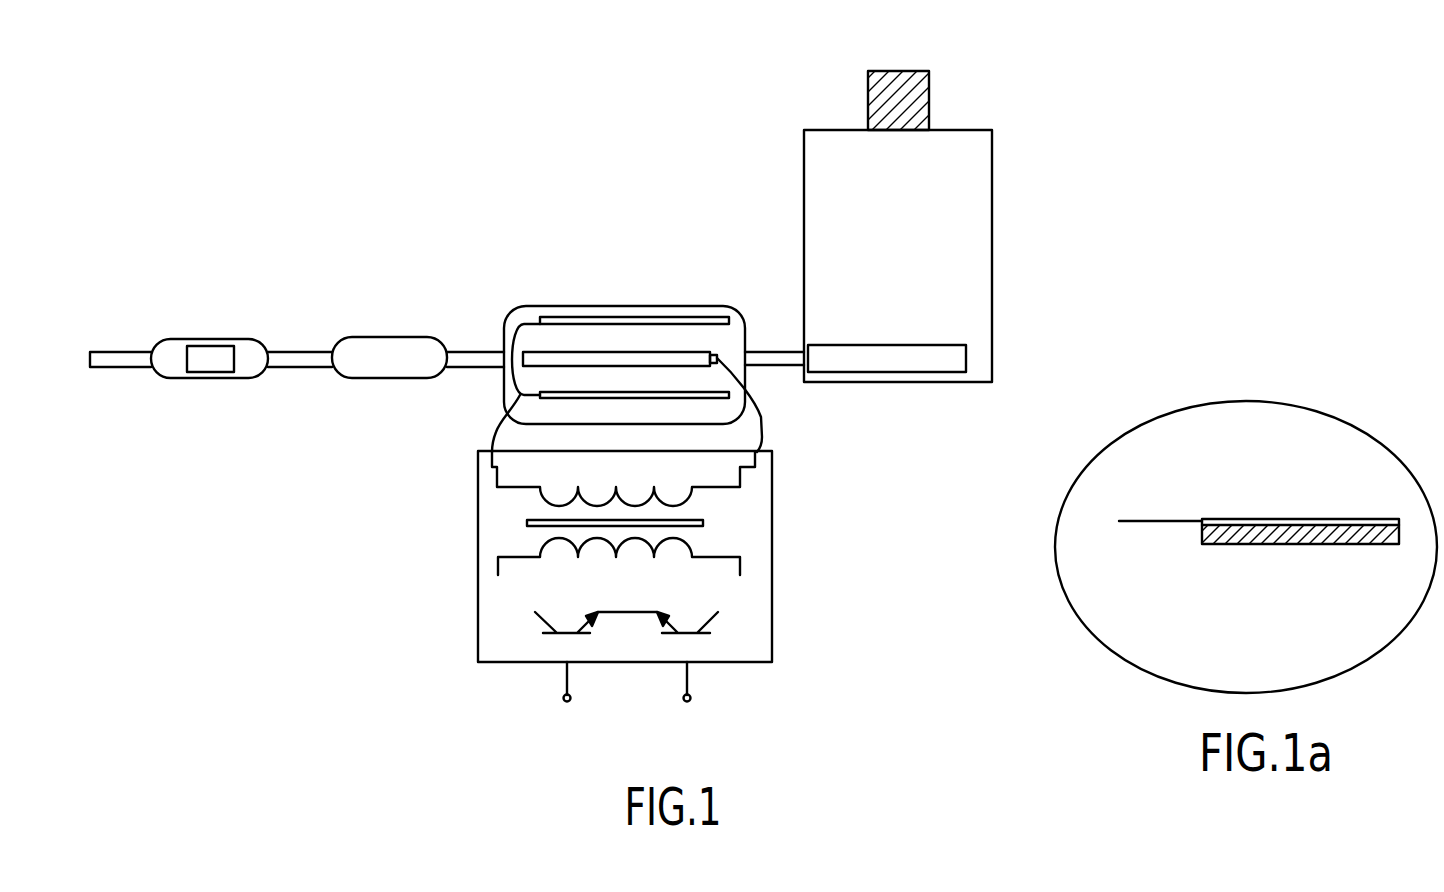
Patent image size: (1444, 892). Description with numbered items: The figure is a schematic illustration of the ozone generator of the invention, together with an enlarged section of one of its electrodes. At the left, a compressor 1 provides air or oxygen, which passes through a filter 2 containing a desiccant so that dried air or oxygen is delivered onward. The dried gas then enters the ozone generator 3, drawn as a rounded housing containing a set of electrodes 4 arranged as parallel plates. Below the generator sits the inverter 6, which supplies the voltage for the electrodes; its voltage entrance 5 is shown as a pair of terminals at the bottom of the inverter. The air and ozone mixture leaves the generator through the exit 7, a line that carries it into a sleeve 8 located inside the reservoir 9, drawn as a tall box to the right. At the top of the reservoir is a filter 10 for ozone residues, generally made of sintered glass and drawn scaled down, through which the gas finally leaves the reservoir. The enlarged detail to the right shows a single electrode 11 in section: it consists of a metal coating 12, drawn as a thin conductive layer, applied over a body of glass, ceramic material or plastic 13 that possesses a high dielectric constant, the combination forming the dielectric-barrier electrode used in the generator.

In FIG. 1, the compressor 1 is at (193, 347).
In FIG. 1, the filter with desiccant 2 is at (373, 338).
In FIG. 1, the ozone generator 3 is at (592, 313).
In FIG. 1, the electrodes 4 is at (707, 392).
In FIG. 1, the voltage entrance of the inverter 5 is at (567, 682).
In FIG. 1, the inverter 6 is at (703, 522).
In FIG. 1, the exit of the air and ozone mixture 7 is at (765, 367).
In FIG. 1, the sleeve 8 is at (890, 362).
In FIG. 1, the reservoir 9 is at (833, 200).
In FIG. 1, the filter for ozone residues 10 is at (868, 82).
In FIG. 1A, the electrode 11 is at (1261, 428).
In FIG. 1A, the metal coating 12 is at (1213, 517).
In FIG. 1A, the glass, ceramic material or plastic 13 is at (1290, 534).